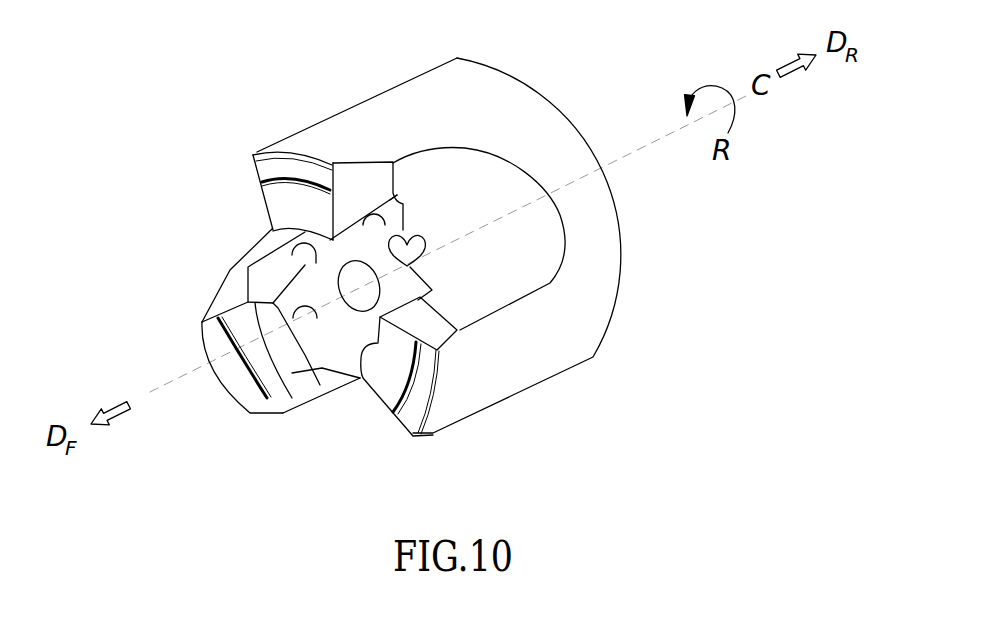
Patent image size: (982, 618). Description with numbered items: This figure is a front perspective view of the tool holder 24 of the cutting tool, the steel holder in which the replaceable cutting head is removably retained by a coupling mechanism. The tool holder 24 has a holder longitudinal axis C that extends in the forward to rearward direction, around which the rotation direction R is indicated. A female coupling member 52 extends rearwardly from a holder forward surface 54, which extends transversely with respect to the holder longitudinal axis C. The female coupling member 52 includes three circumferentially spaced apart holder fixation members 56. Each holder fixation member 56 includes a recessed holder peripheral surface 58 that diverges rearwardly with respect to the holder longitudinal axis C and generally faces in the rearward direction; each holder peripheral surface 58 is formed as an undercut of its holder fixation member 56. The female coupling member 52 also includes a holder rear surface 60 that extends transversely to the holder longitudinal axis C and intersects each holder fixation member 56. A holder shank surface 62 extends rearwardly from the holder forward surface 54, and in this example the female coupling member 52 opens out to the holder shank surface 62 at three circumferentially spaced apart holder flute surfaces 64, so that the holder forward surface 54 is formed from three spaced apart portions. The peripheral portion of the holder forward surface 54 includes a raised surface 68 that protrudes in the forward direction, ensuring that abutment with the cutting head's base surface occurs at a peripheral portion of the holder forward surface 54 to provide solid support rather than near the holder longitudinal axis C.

The tool holder 24 is at (627, 48).
The female coupling member 52 is at (347, 340).
The holder forward surface 54 is at (277, 197).
The holder fixation member 56 is at (255, 238).
The holder peripheral surface 58 is at (395, 232).
The holder rear surface 60 is at (372, 250).
The holder shank surface 62 is at (375, 137).
The holder flute surface 64 is at (457, 168).
The raised surface 68 is at (277, 167).